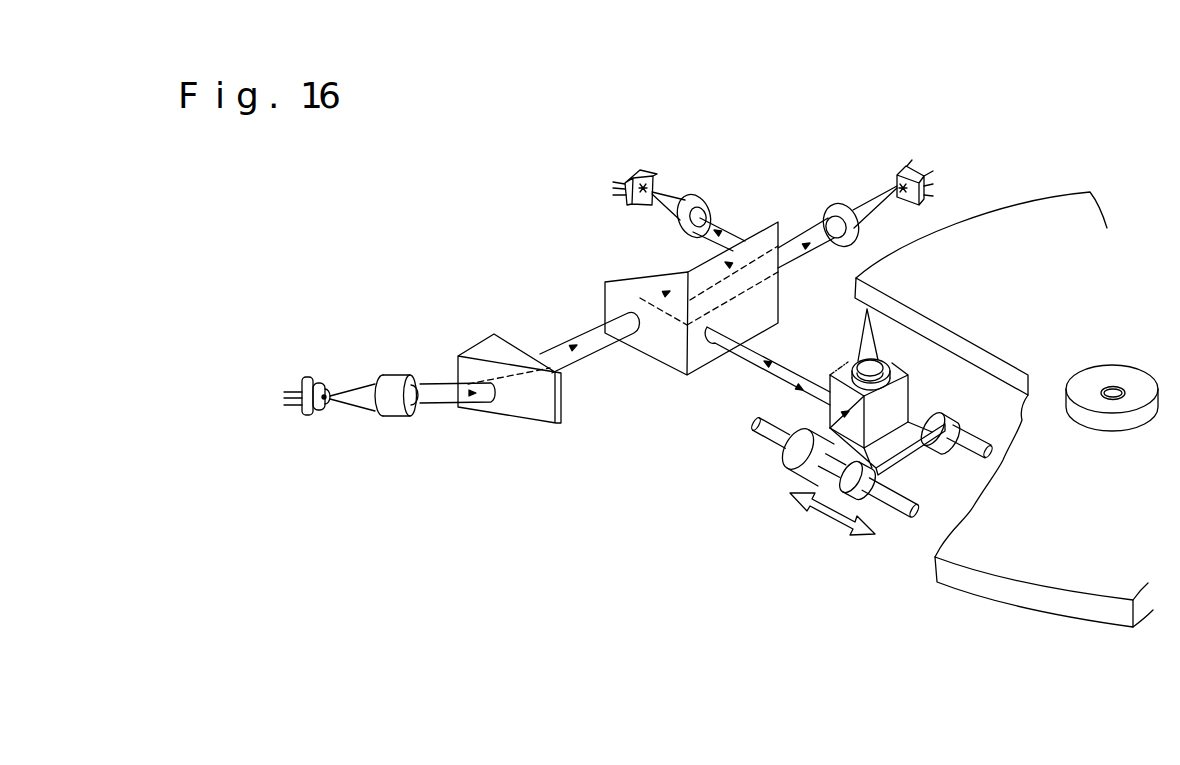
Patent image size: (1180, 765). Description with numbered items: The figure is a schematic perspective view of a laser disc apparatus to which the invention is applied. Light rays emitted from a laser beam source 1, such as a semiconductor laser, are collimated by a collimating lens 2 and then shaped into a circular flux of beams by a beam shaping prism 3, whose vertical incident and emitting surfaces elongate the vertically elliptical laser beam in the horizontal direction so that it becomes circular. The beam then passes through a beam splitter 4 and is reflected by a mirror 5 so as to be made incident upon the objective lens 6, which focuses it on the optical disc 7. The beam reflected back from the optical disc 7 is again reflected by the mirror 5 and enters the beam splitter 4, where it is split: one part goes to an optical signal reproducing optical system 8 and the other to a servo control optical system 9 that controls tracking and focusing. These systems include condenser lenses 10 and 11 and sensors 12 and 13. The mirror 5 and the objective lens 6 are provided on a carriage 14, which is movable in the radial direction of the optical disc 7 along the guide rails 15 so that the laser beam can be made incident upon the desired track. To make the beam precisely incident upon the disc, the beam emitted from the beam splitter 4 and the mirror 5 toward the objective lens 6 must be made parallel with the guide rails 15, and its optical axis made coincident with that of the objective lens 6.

The laser beam source 1 is at (315, 418).
The collimating lens 2 is at (387, 370).
The beam shaping prism 3 is at (520, 403).
The beam splitter 4 is at (645, 338).
The mirror 5 is at (797, 475).
The objective lens 6 is at (887, 367).
The optical disc 7 is at (983, 567).
The optical signal reproducing optical system 8 is at (914, 174).
The servo control optical system 9 is at (646, 168).
The condenser lens 10 is at (856, 230).
The condenser lens 11 is at (713, 198).
The sensor 12 is at (928, 188).
The sensor 13 is at (657, 177).
The carriage 14 is at (903, 455).
The guide rails 15 is at (900, 507).